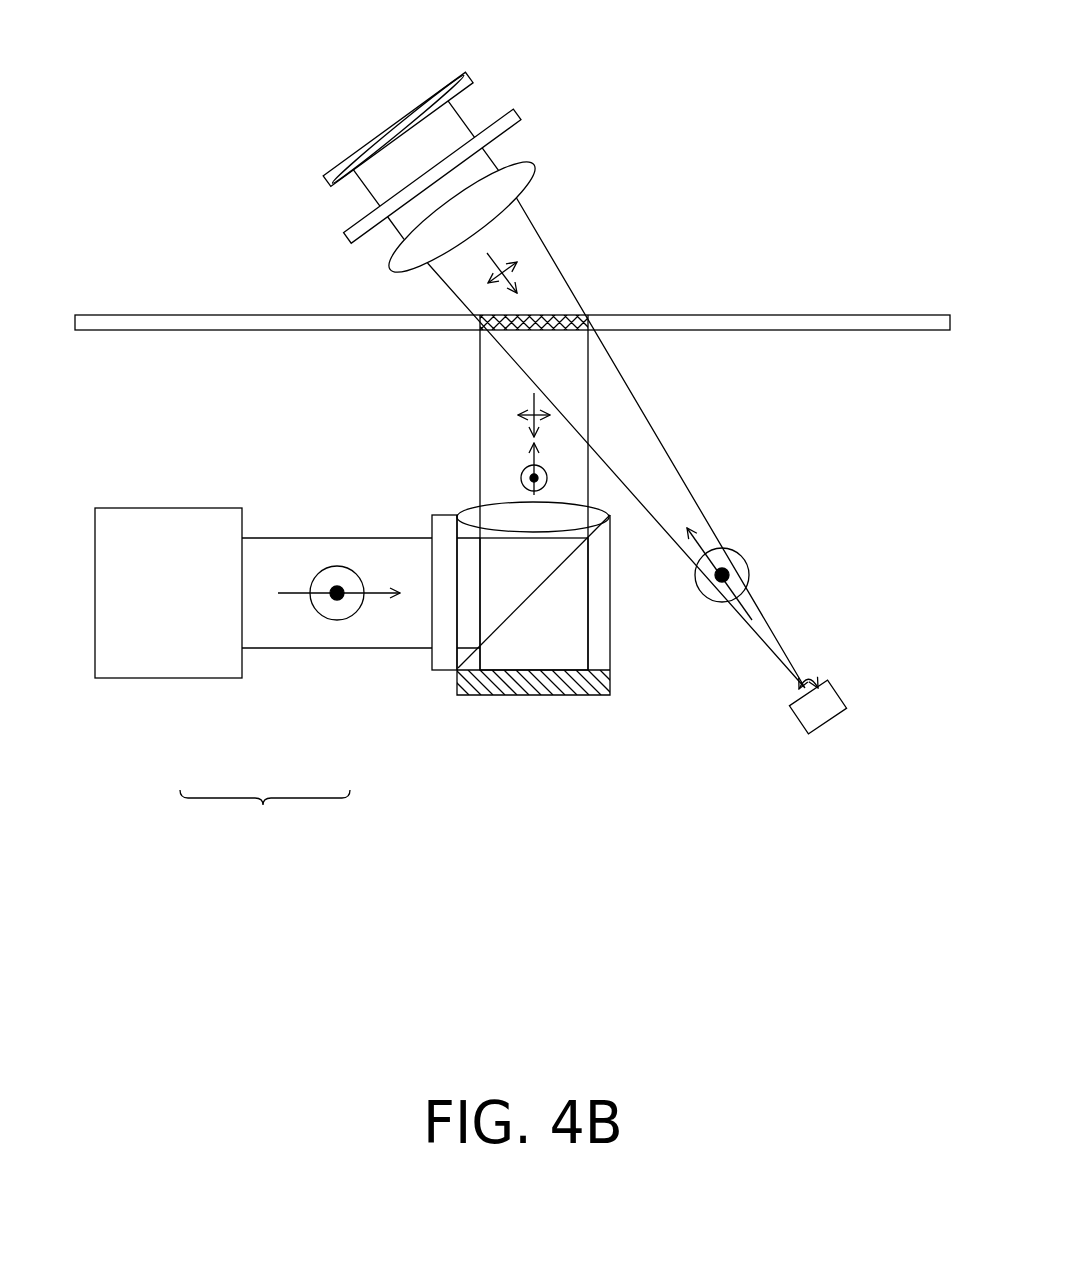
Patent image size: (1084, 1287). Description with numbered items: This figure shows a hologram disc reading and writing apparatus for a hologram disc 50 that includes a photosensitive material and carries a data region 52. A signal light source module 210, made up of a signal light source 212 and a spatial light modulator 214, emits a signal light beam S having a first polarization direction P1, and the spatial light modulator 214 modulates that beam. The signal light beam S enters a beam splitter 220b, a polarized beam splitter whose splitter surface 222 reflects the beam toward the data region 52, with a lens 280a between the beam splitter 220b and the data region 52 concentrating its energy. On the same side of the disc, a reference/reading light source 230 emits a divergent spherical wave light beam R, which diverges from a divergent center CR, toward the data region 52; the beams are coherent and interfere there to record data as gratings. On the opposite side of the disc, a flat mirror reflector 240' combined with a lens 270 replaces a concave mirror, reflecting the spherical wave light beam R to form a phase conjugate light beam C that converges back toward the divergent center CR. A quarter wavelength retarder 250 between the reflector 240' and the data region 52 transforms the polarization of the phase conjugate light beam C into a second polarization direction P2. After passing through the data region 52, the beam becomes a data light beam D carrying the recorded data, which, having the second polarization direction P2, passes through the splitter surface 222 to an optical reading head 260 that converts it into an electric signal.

The reflector 240' is at (489, 101).
The quarter wavelength retarder 250 is at (508, 120).
The lens 270 is at (513, 180).
The phase conjugate light beam C is at (500, 255).
The second polarization direction P2 is at (487, 279).
The hologram disc 50 is at (863, 323).
The data region 52 is at (550, 316).
The data light beam D is at (533, 425).
The signal light beam S is at (533, 453).
The first polarization direction P1 is at (327, 568).
The signal light source 212 is at (197, 660).
The spatial light modulator 214 is at (445, 650).
The signal light source module 210 is at (265, 819).
The beam splitter 220b is at (597, 640).
The splitter surface 222 is at (557, 570).
The optical reading head 260 is at (527, 680).
The lens 280a is at (596, 507).
The spherical wave light beam R is at (747, 605).
The divergent center CR is at (808, 684).
The reference/reading light source 230 is at (822, 703).